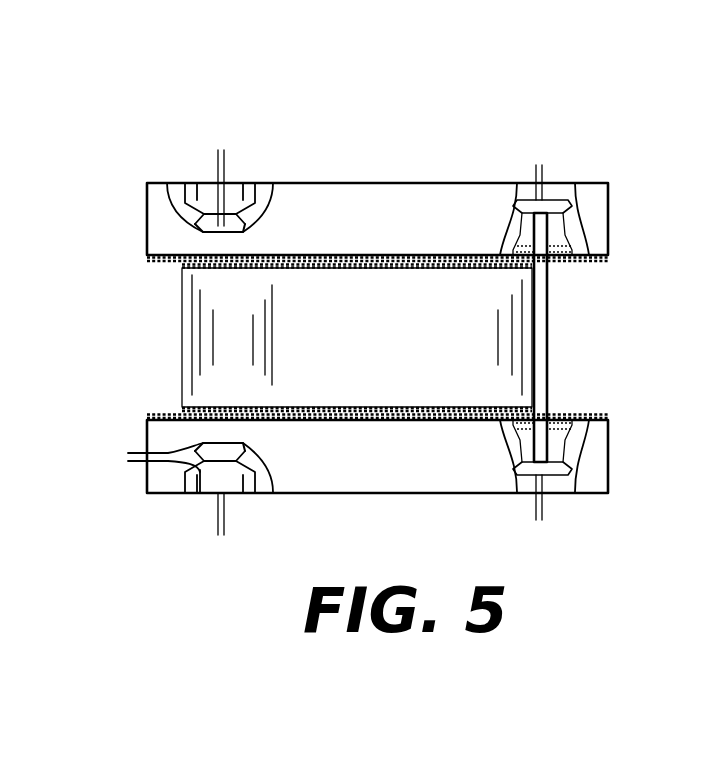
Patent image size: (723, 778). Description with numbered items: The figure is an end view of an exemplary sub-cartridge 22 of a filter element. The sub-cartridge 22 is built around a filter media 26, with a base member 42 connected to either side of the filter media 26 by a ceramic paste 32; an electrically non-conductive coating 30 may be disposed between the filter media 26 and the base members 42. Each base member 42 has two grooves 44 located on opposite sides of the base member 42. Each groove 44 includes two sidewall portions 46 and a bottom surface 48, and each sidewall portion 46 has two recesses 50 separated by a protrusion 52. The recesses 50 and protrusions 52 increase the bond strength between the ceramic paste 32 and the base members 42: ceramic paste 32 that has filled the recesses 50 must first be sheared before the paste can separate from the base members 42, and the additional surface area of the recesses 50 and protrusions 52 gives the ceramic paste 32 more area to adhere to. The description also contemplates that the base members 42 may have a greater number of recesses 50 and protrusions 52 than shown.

The sub-cartridge 22 is at (222, 84).
The filter media 26 is at (357, 347).
The electrically non-conductive coating 30 is at (335, 339).
The ceramic paste 32 is at (184, 262).
The base member 42 is at (373, 230).
The groove 44 is at (384, 352).
The sidewall portion 46 is at (185, 183).
The bottom surface 48 is at (230, 234).
The recess 50 is at (167, 183).
The protrusion 52 is at (380, 340).